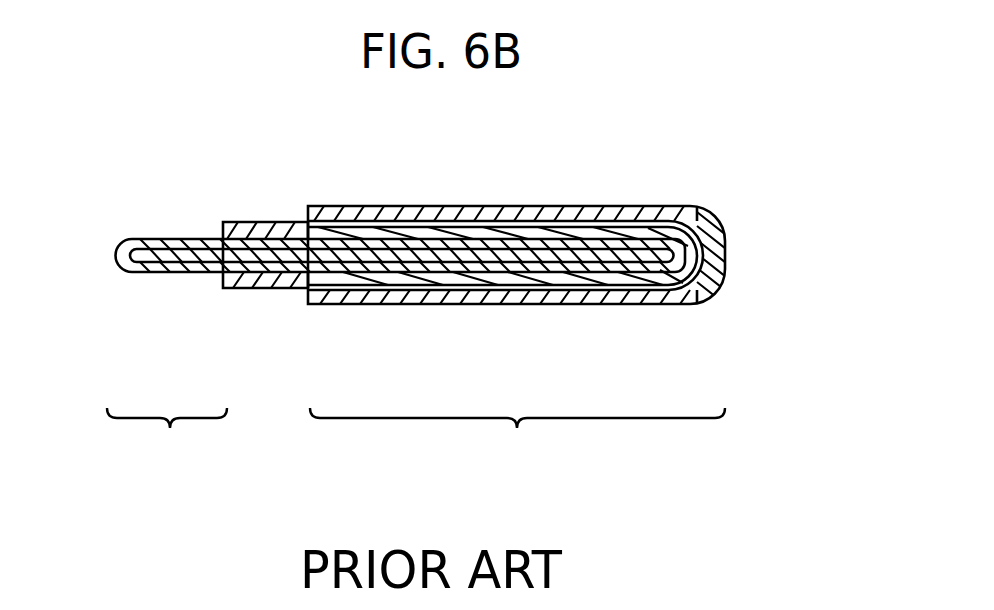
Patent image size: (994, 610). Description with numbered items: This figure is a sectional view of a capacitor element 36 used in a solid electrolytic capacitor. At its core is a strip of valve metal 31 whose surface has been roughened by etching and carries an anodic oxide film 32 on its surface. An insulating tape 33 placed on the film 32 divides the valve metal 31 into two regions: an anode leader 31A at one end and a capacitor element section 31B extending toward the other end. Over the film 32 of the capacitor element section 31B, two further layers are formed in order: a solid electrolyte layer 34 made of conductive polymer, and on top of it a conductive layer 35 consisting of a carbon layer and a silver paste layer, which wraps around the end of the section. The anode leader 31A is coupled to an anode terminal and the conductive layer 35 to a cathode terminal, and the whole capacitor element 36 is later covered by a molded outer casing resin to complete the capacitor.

The valve metal 31 is at (177, 255).
The anode leader 31A is at (167, 437).
The capacitor element section 31B is at (517, 437).
The anodic oxide film 32 is at (376, 262).
The insulating tape 33 is at (255, 278).
The solid electrolyte layer 34 is at (517, 278).
The conductive layer 35 is at (477, 213).
The capacitor element 36 is at (727, 282).